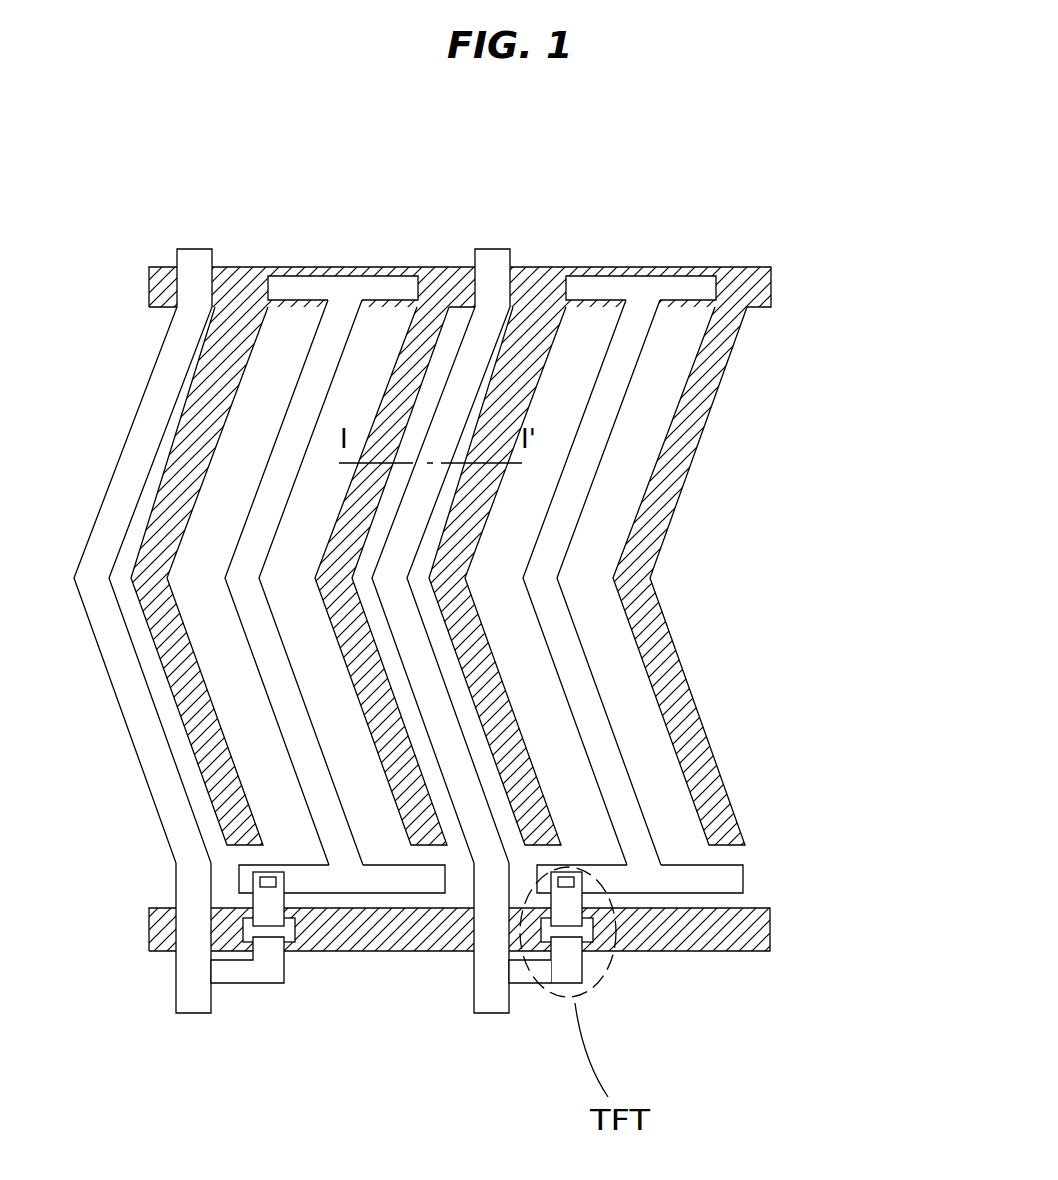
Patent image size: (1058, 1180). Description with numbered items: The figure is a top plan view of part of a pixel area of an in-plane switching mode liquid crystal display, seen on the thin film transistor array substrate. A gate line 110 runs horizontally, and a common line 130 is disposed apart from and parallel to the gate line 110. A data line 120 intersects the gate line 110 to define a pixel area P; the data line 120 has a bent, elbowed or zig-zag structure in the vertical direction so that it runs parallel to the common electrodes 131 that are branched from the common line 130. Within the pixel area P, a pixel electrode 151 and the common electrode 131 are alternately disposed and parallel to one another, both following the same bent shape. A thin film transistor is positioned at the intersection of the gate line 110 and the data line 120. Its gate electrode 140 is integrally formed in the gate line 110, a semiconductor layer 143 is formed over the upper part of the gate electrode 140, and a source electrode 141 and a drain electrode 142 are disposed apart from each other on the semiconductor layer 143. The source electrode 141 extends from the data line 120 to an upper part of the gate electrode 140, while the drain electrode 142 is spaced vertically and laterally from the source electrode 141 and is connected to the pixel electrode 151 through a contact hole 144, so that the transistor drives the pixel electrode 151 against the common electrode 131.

The gate line 110 is at (772, 925).
The data line 120 is at (487, 1010).
The common line 130 is at (772, 280).
The common electrode 131 is at (705, 412).
The gate electrode 140 is at (603, 977).
The source electrode 141 is at (565, 975).
The drain electrode 142 is at (577, 912).
The semiconductor layer 143 is at (593, 937).
The contact hole 144 is at (472, 953).
The pixel electrode 151 is at (567, 513).
The pixel area P is at (262, 250).